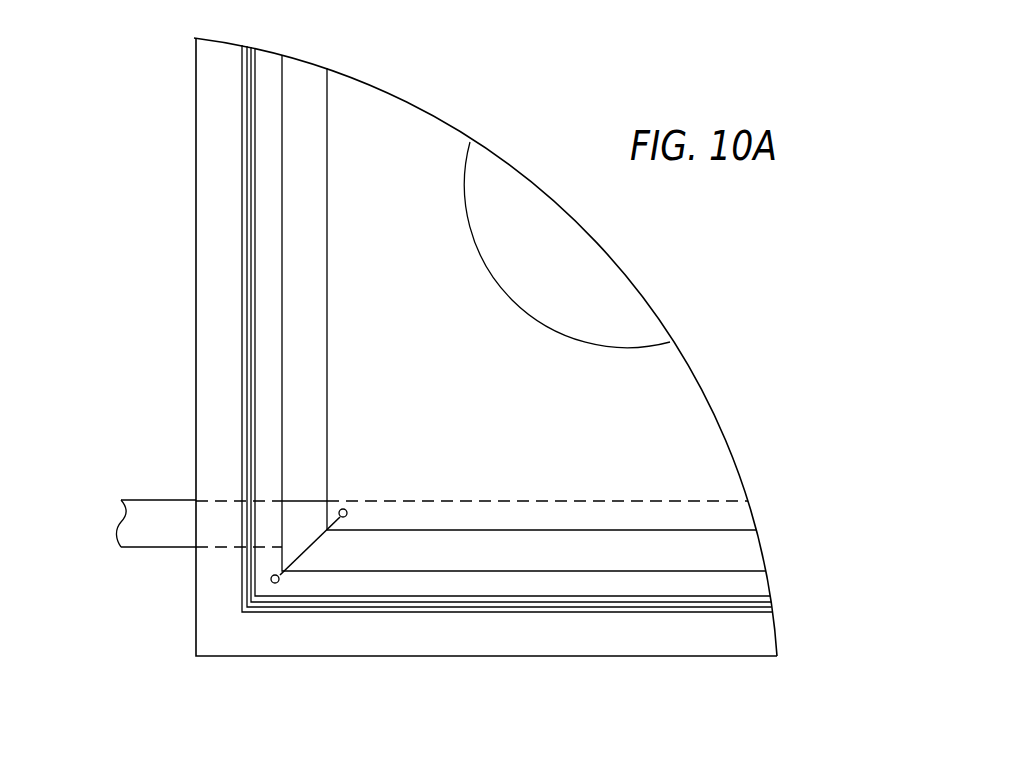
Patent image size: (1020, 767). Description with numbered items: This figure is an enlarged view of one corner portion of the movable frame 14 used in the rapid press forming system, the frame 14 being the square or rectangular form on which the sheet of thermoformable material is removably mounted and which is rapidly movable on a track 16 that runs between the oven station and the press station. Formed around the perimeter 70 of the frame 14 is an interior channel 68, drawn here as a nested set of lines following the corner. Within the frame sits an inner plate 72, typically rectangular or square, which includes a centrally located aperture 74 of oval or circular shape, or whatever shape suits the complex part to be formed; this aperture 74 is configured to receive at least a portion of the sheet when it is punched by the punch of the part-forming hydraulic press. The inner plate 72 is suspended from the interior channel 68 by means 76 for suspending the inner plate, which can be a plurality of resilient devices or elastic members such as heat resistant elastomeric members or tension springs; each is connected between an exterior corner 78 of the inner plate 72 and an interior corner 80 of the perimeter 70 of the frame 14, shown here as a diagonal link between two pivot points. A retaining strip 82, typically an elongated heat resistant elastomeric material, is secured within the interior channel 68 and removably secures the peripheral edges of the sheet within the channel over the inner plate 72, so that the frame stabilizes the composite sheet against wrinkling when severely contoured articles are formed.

The frame 14 is at (152, 132).
The track 16 is at (155, 537).
The interior channel 68 is at (240, 233).
The perimeter 70 is at (212, 354).
The inner plate 72 is at (388, 118).
The aperture 74 is at (530, 310).
The means for suspending the inner plate 76 is at (308, 548).
The exterior corners 78 is at (347, 514).
The interior corners 80 is at (279, 580).
The retaining strip 82 is at (252, 270).